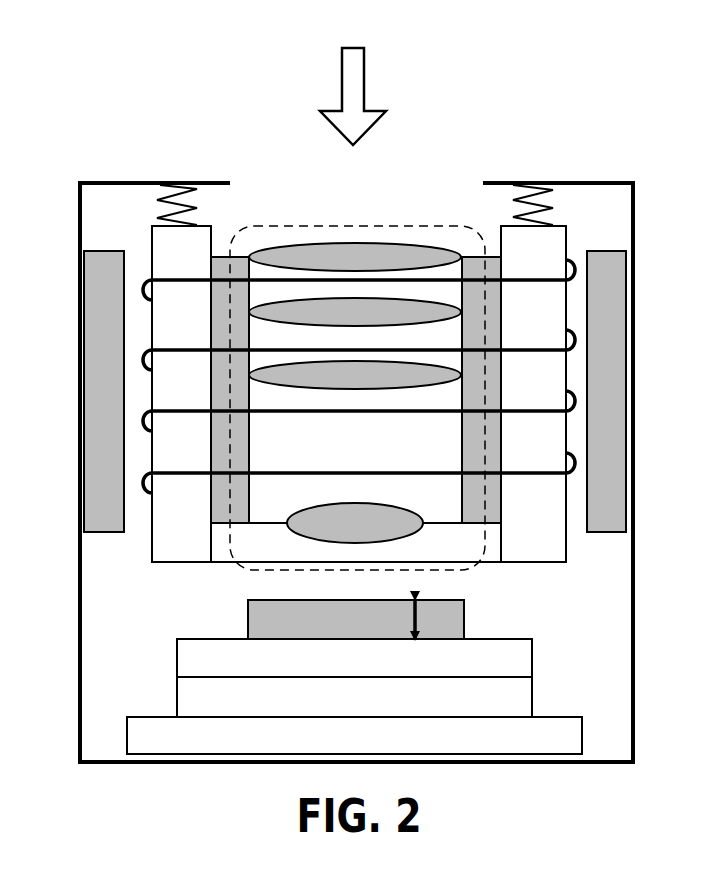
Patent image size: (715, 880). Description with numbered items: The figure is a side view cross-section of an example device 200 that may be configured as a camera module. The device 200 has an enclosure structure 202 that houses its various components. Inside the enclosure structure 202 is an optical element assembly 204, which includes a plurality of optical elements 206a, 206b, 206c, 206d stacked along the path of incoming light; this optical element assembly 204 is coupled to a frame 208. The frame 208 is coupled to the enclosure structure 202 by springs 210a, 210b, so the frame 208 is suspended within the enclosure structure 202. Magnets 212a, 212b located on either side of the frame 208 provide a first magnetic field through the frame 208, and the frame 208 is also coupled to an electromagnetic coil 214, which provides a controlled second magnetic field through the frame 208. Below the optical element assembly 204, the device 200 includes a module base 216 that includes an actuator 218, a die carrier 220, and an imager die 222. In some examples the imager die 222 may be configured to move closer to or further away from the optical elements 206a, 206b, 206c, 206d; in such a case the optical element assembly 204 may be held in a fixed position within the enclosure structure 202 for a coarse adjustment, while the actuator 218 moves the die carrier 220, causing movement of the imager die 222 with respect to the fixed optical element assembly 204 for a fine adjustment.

The device 200 is at (584, 106).
The enclosure structure 202 is at (79, 205).
The optical element assembly 204 is at (384, 220).
The optical element 206a is at (355, 257).
The optical element 206b is at (355, 312).
The optical element 206c is at (355, 375).
The optical element 206d is at (355, 523).
The frame 208 is at (359, 394).
The spring 210a is at (161, 195).
The spring 210b is at (519, 195).
The magnet 212a is at (84, 396).
The magnet 212b is at (628, 396).
The electromagnetic coil 214 is at (142, 500).
The module base 216 is at (354, 735).
The actuator 218 is at (354, 697).
The die carrier 220 is at (354, 658).
The imager die 222 is at (356, 620).